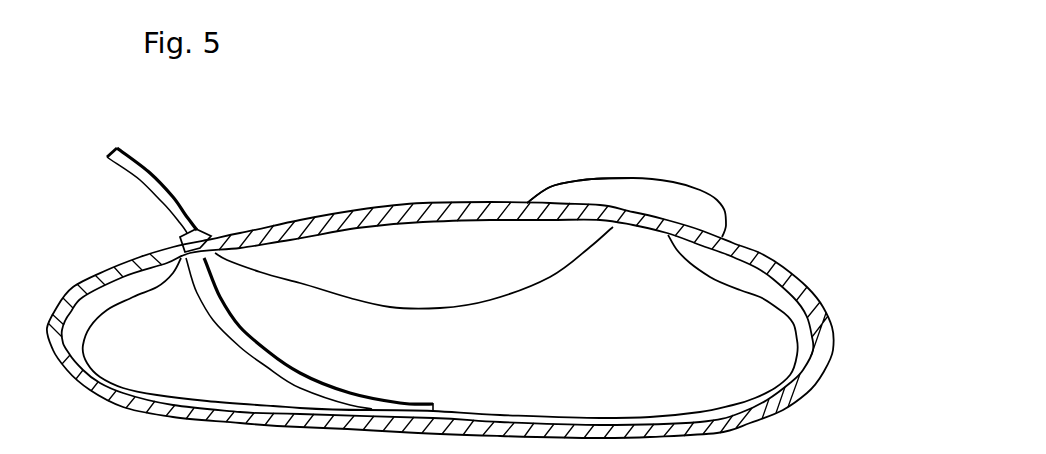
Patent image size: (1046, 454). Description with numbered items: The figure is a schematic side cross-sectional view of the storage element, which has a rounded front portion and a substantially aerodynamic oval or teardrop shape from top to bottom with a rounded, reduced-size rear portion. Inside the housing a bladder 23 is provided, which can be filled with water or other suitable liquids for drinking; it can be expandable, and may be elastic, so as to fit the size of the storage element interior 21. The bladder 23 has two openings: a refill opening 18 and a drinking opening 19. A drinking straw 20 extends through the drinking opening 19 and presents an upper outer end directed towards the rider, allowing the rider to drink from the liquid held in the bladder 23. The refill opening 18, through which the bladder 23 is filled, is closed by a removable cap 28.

The refill opening 18 is at (682, 200).
The drinking opening 19 is at (203, 237).
The drinking straw 20 is at (143, 163).
The storage element interior 21 is at (390, 263).
The bladder 23 is at (792, 363).
The removable cap 28 is at (578, 190).